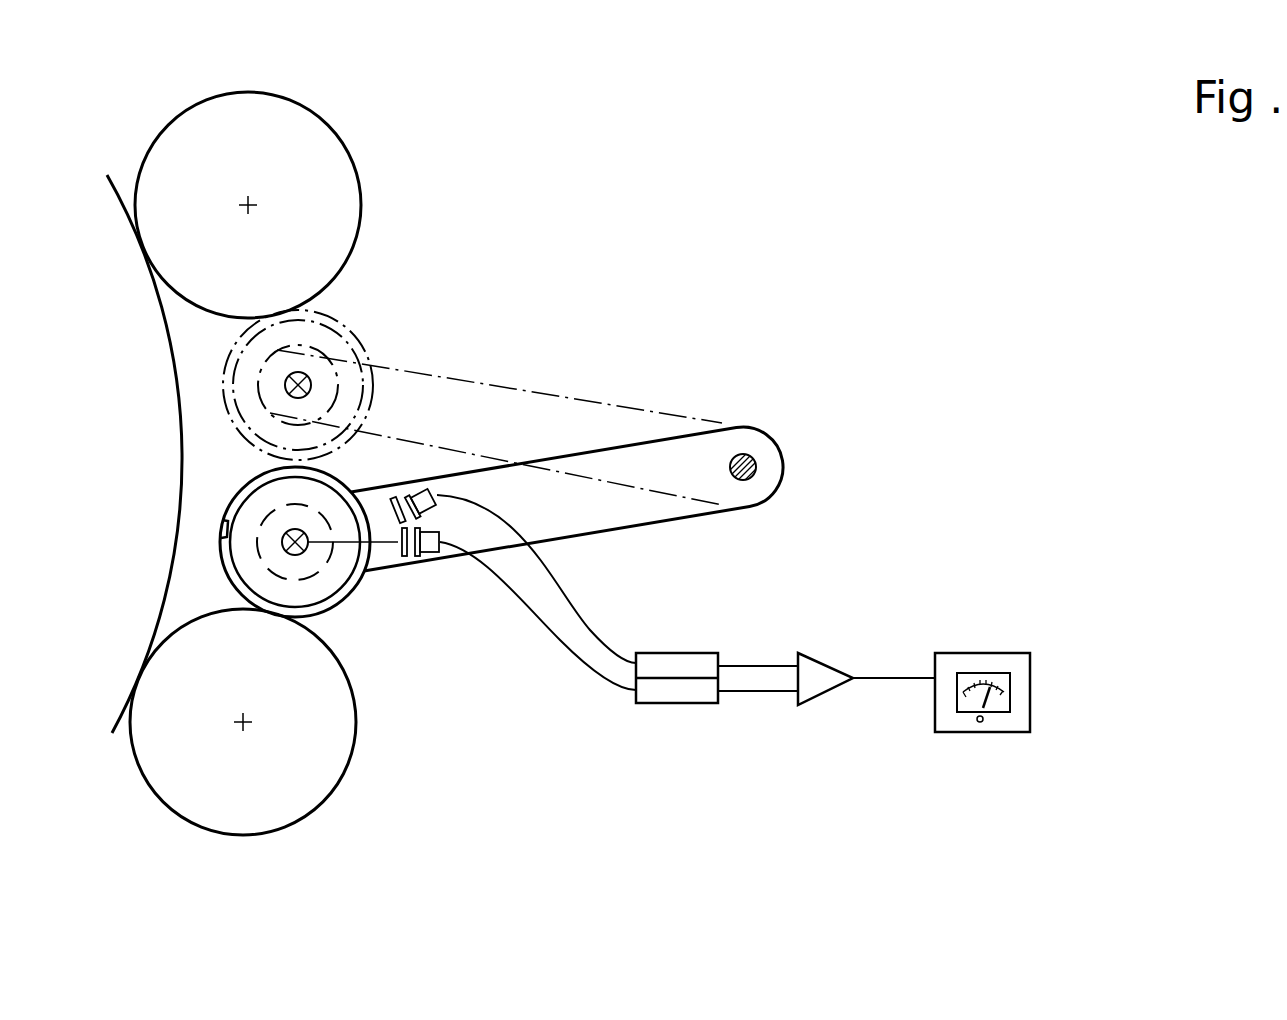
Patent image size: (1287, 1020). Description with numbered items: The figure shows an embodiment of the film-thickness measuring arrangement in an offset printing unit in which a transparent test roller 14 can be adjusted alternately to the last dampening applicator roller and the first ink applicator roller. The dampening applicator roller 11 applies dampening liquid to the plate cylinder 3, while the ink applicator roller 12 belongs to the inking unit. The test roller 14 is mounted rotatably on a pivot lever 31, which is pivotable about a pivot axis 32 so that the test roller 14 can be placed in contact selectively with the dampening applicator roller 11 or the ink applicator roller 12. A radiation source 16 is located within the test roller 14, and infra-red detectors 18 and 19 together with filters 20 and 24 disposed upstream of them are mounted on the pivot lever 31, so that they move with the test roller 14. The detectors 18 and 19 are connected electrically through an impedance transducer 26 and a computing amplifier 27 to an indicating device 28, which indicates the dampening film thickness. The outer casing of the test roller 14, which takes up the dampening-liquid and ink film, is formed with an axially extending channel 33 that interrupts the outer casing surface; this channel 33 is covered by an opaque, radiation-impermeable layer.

The plate cylinder 3 is at (115, 183).
The second dampening applicator roller 11 is at (307, 692).
The ink applicator roller 12 is at (317, 160).
The transparent test roller 14 is at (330, 330).
The radiation source 16 is at (302, 538).
The infra-red detector 18 is at (432, 493).
The infra-red detector 19 is at (433, 552).
The filter 20 is at (399, 497).
The filter 24 is at (404, 556).
The impedance transducer 26 is at (677, 665).
The computing amplifier 27 is at (810, 673).
The indicating device 28 is at (975, 663).
The pivot lever 31 is at (575, 428).
The pivot axis 32 is at (743, 455).
The channel 33 is at (223, 537).